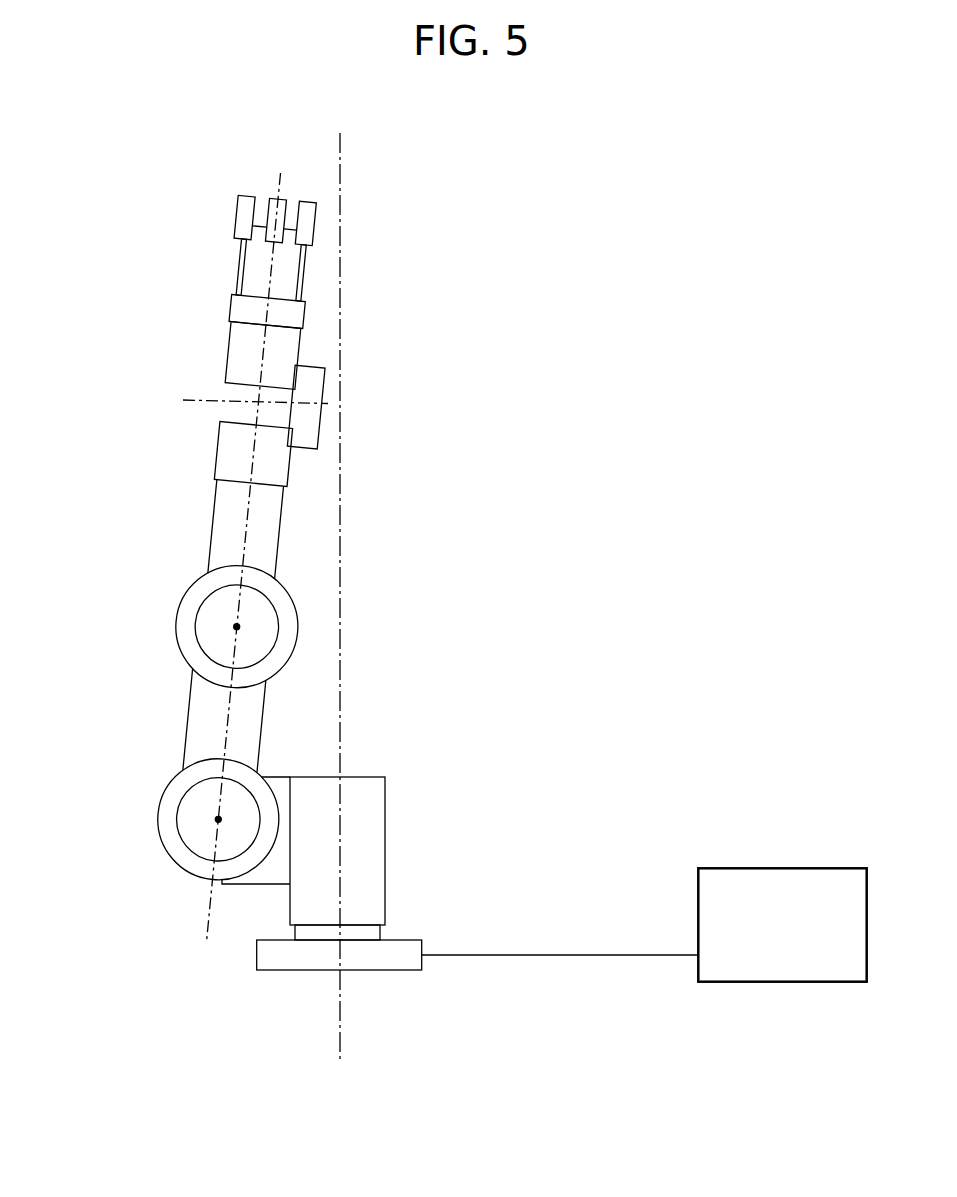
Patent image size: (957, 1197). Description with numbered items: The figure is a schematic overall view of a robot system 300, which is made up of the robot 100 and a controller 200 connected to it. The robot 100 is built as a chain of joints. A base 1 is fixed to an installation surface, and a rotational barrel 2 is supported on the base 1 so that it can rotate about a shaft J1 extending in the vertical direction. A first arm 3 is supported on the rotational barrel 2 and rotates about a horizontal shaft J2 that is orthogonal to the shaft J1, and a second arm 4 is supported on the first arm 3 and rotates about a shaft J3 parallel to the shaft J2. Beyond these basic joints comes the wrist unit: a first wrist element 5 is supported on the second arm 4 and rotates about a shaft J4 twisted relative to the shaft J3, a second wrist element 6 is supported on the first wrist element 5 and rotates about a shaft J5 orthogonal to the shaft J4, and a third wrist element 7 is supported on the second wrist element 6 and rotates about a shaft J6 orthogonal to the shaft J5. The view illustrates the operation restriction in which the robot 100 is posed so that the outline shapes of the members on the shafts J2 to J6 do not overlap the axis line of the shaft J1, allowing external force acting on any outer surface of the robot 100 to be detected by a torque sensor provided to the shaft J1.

The base 1 is at (257, 953).
The rotational barrel 2 is at (385, 828).
The first arm 3 is at (158, 817).
The second arm 4 is at (180, 610).
The first wrist element 5 is at (218, 449).
The second wrist element 6 is at (227, 352).
The third wrist element 7 is at (230, 305).
The robot 100 is at (234, 228).
The controller 200 is at (790, 850).
The robot system 300 is at (640, 222).
The shaft J1 is at (341, 1018).
The shaft J2 is at (201, 819).
The shaft J3 is at (218, 627).
The shaft J4 is at (246, 519).
The shaft J5 is at (239, 404).
The shaft J6 is at (267, 267).